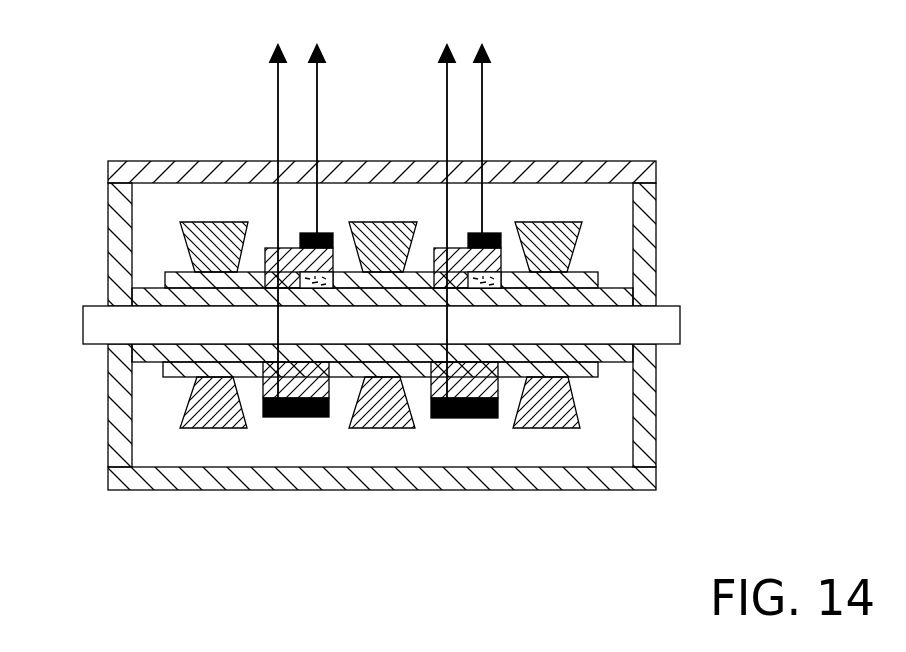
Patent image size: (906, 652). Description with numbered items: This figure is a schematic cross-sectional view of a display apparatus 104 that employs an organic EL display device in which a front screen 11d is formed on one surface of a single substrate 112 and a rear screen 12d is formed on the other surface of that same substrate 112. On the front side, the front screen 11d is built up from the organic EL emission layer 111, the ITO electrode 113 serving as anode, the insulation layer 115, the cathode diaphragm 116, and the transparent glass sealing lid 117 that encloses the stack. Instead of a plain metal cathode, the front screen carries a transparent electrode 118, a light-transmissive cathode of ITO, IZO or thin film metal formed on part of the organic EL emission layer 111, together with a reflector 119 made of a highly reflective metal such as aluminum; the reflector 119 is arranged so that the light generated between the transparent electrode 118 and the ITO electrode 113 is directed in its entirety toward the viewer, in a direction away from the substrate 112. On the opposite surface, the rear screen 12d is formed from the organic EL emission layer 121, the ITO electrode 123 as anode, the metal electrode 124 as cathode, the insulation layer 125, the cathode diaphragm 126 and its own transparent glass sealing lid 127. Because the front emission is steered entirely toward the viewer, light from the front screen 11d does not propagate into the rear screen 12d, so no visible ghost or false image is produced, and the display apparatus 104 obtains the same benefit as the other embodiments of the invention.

The display apparatus 104 is at (436, 281).
The organic EL emission layer 111 is at (273, 247).
The substrate 112 is at (680, 310).
The ITO electrode (anode) 113 is at (150, 291).
The insulation layer 115 is at (173, 272).
The cathode diaphragm 116 is at (549, 228).
The transparent glass sealing lid 117 is at (632, 161).
The transparent electrode 118 is at (313, 236).
The reflector 119 is at (333, 270).
The organic EL emission layer 121 is at (329, 419).
The ITO electrode (anode) 123 is at (152, 361).
The metal electrode (cathode) 124 is at (297, 418).
The insulation layer 125 is at (177, 378).
The cathode diaphragm 126 is at (216, 429).
The transparent glass sealing lid 127 is at (656, 490).
The front screen 11d is at (419, 199).
The rear screen 12d is at (419, 444).